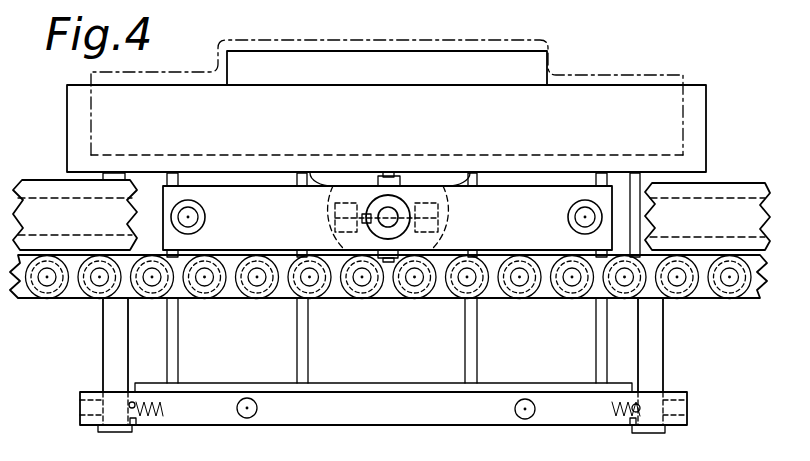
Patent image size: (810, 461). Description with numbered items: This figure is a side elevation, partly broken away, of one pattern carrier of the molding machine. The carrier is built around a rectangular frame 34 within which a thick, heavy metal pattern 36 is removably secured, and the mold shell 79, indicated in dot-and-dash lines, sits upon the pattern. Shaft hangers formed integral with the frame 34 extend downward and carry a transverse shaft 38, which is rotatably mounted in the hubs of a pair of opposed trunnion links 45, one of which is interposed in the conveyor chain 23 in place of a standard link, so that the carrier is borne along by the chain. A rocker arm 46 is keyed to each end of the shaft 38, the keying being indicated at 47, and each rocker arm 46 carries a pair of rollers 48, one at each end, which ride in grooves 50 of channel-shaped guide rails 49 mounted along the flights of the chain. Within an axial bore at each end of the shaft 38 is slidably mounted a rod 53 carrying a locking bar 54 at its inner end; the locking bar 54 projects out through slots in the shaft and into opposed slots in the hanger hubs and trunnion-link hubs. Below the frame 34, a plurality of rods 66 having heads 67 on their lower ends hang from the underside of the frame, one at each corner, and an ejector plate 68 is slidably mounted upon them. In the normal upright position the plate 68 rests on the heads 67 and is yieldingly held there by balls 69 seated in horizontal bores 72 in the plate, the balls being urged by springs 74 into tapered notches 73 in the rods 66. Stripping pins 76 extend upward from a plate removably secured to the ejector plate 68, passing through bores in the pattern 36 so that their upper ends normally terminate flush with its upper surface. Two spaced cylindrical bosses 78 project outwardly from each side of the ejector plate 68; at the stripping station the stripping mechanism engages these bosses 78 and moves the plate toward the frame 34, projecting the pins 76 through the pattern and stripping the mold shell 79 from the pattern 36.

The chain 23 is at (73, 299).
The rectangular frame 34 is at (602, 100).
The pattern 36 is at (335, 68).
The transverse shaft 38 is at (398, 227).
The trunnion link 45 is at (390, 297).
The rocker arm 46 is at (233, 197).
The key 47 is at (366, 214).
The roller 48 is at (205, 227).
The guide rail 49 is at (40, 210).
The groove 50 is at (70, 236).
The rod 53 is at (391, 216).
The locking bar 54 is at (335, 218).
The rod 66 is at (112, 354).
The head 67 is at (110, 433).
The ejector plate 68 is at (453, 420).
The ball 69 is at (137, 427).
The horizontal bore 72 is at (143, 392).
The tapered notch 73 is at (128, 402).
The spring 74 is at (165, 410).
The stripping pin 76 is at (172, 342).
The cylindrical boss 78 is at (258, 408).
The mold shell 79 is at (486, 42).